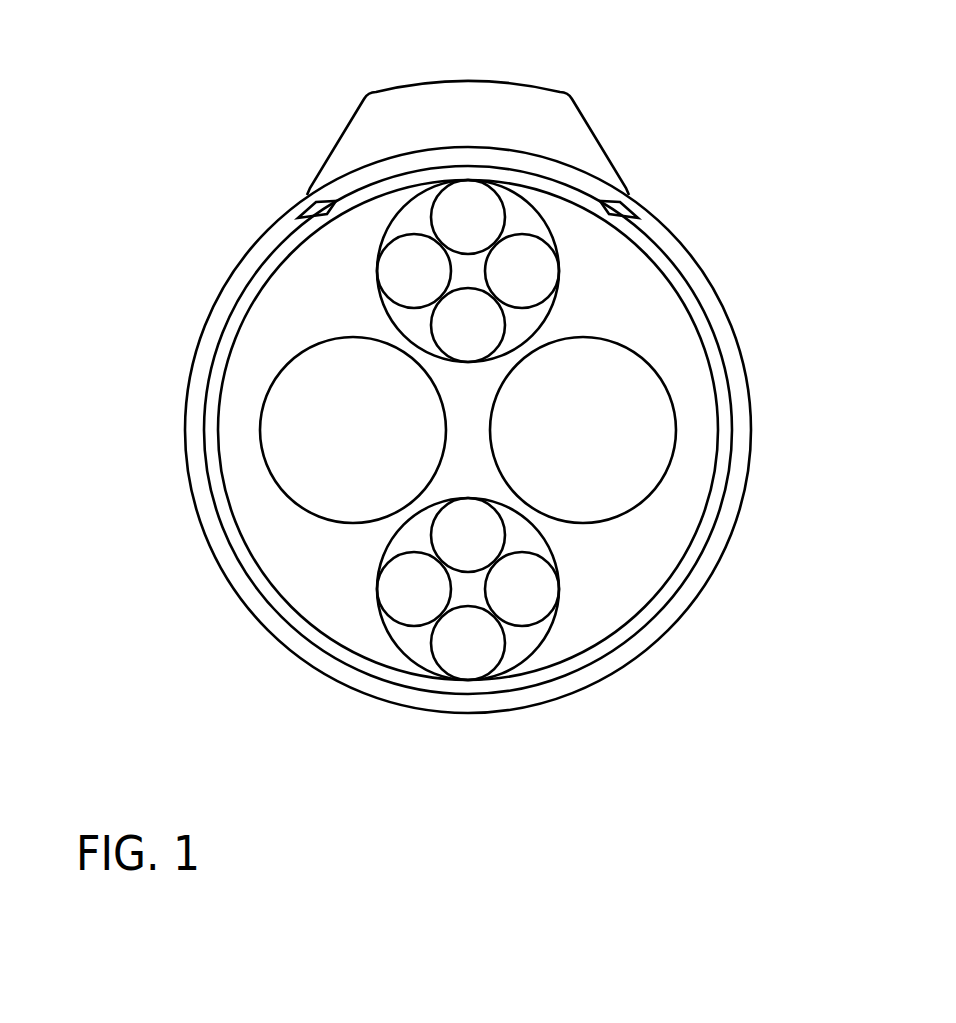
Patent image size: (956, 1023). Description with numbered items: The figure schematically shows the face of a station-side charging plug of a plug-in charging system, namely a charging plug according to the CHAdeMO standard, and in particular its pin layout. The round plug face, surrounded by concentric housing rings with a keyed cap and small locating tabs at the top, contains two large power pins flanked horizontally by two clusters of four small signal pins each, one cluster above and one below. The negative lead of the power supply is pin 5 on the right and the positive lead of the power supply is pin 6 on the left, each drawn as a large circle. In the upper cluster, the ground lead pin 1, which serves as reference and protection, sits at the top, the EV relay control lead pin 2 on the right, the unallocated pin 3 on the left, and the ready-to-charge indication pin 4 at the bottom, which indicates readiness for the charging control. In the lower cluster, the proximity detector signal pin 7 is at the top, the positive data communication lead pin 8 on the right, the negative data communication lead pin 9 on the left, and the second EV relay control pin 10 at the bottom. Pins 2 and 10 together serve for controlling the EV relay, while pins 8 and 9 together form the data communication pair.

The pin 1, ground lead 1 is at (468, 215).
The pin 2, EV relay control lead 2 is at (522, 272).
The pin 3, unallocated pin 3 is at (413, 272).
The pin 4, ready-to-charge indication lead 4 is at (468, 325).
The pin 5, negative power supply lead 5 is at (633, 423).
The pin 6, positive power supply lead 6 is at (302, 427).
The pin 7, proximity detector signal lead 7 is at (470, 525).
The pin 8, positive data communication lead 8 is at (537, 591).
The pin 9, negative data communication lead 9 is at (398, 591).
The pin 10, EV relay control lead 10 is at (467, 643).